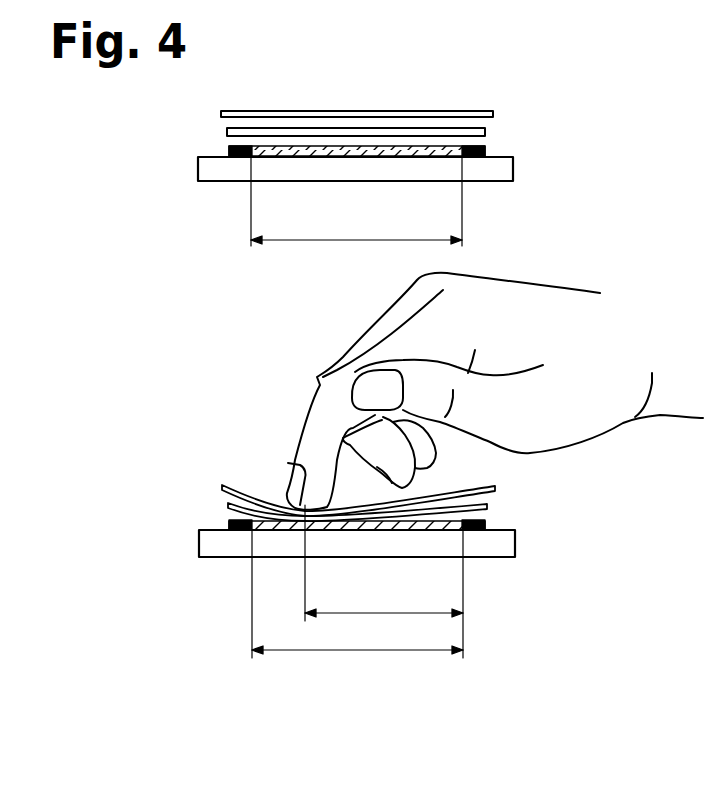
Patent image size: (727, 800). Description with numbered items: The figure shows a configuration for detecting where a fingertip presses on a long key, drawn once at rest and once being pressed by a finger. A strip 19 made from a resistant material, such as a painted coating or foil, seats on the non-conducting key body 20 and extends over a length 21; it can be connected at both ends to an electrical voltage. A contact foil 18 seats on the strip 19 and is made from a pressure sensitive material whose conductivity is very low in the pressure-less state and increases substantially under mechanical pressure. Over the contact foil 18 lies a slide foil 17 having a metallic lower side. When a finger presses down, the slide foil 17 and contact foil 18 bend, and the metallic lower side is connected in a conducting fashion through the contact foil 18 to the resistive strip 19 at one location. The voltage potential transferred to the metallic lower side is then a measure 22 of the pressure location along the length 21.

The slide foil 17 is at (493, 113).
The contact foil 18 is at (485, 132).
The strip 19 is at (485, 150).
The key body 20 is at (503, 168).
The length 21 is at (357, 407).
The measure 22 is at (384, 563).